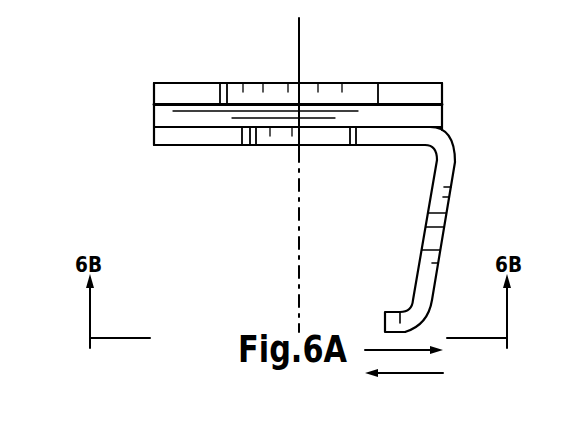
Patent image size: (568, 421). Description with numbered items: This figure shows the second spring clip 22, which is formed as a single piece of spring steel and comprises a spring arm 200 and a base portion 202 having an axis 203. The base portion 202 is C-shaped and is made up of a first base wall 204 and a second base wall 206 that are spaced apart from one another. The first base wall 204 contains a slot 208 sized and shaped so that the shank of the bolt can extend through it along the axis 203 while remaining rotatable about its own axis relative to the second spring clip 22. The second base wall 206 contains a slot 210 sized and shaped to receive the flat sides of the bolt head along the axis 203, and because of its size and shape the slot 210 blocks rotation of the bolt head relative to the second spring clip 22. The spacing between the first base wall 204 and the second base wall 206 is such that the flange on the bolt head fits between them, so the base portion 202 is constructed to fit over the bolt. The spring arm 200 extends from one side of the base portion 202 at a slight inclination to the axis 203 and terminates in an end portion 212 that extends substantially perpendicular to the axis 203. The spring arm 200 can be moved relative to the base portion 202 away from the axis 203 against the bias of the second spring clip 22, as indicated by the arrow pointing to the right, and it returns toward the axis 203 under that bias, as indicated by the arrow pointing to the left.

The second spring clip 22 is at (112, 87).
The spring arm 200 is at (447, 213).
The base portion 202 is at (145, 128).
The axis 203 is at (300, 60).
The first base wall 204 is at (190, 139).
The second base wall 206 is at (188, 93).
The slot 208 is at (270, 138).
The slot 210 is at (235, 93).
The end portion 212 is at (400, 311).